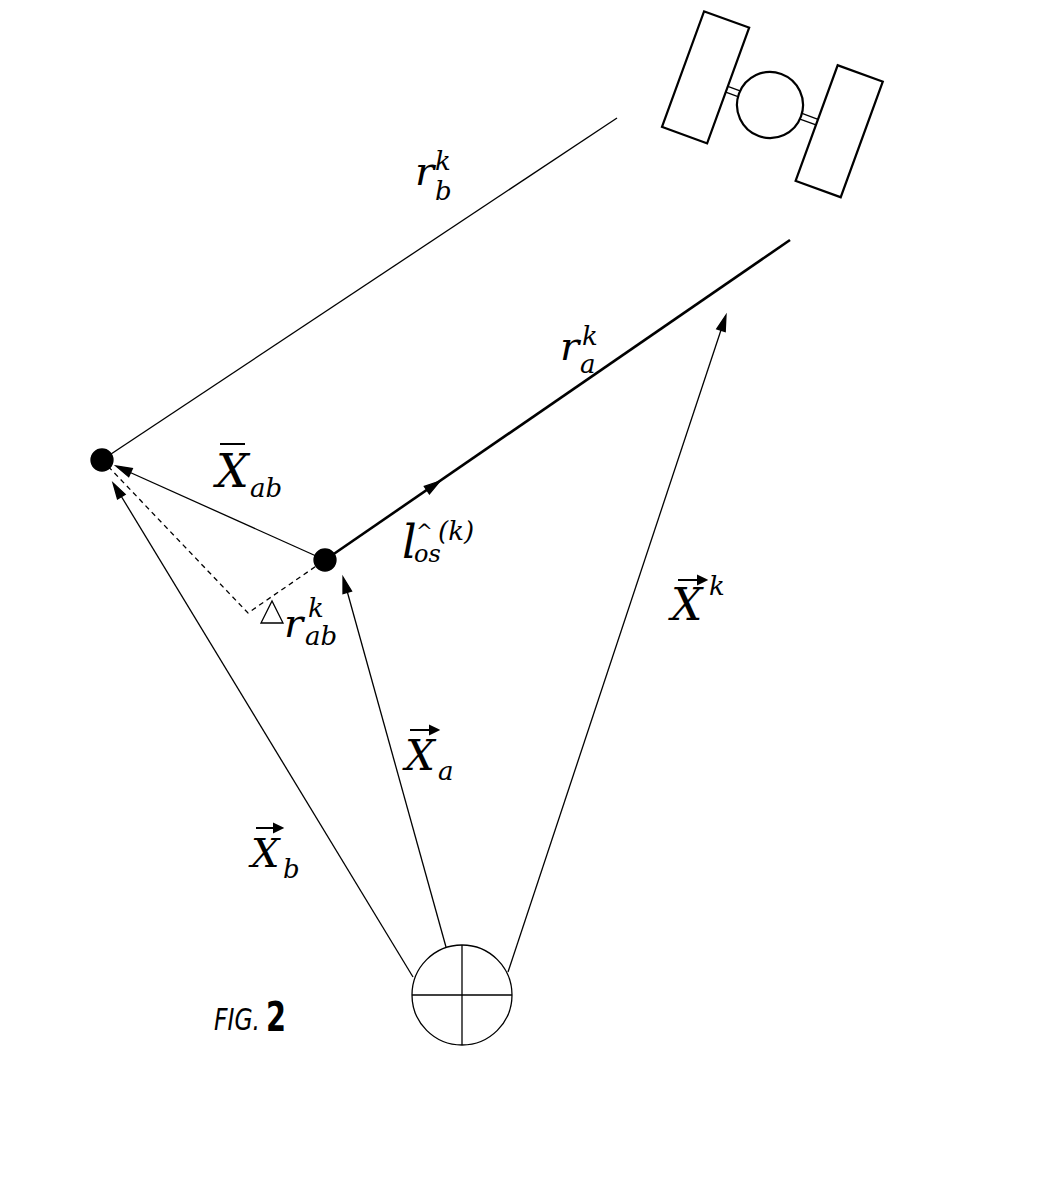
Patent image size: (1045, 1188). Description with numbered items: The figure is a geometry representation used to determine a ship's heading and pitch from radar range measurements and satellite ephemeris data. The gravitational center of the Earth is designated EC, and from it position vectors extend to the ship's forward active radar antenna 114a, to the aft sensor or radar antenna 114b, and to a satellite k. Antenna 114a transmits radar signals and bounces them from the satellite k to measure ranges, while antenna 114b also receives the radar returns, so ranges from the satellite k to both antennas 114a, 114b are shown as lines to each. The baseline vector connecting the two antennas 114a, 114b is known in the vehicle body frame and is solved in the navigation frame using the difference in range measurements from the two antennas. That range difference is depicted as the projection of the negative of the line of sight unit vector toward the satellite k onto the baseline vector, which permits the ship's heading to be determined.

The active radar antenna 114a is at (358, 632).
The sensor or radar antenna 114b is at (88, 453).
The satellite k is at (772, 109).
The gravitational center of the Earth EC is at (484, 995).